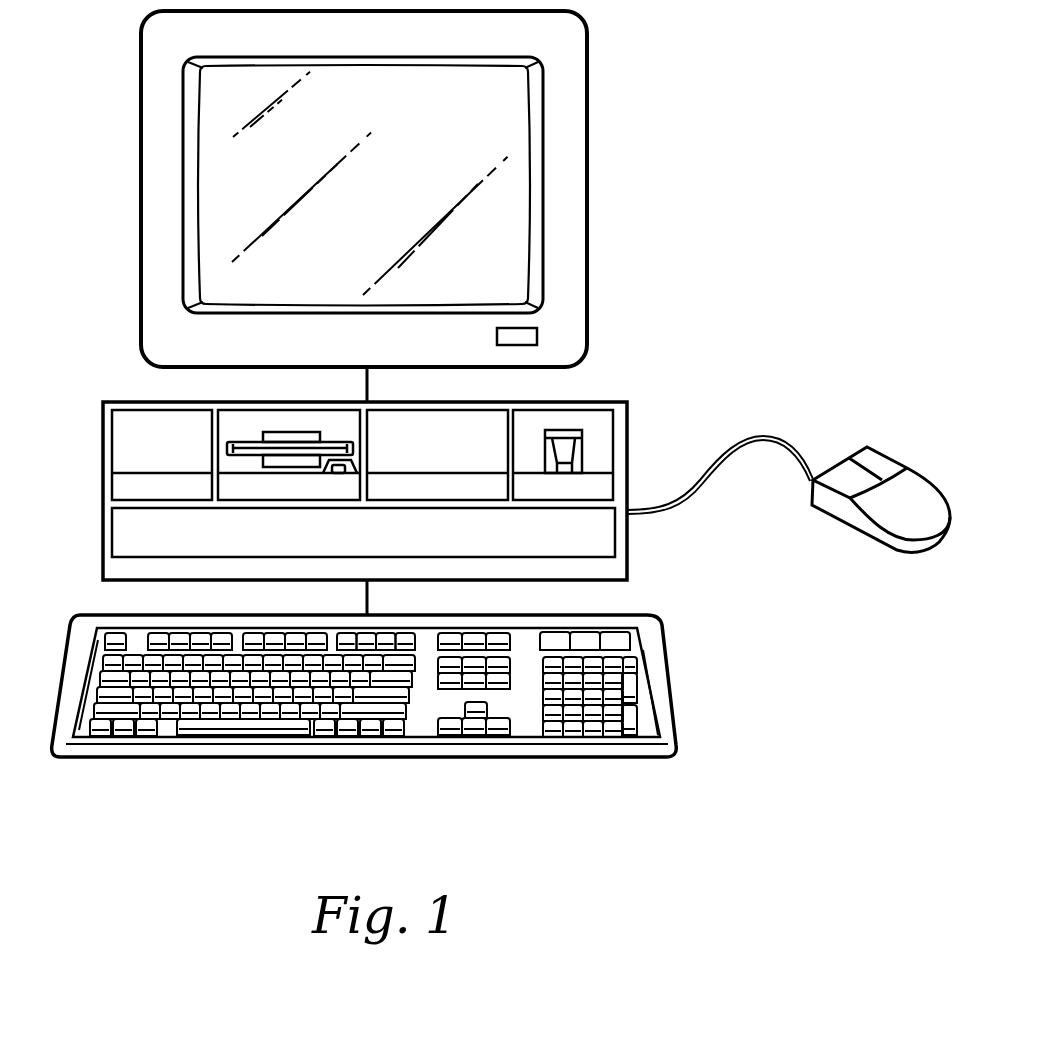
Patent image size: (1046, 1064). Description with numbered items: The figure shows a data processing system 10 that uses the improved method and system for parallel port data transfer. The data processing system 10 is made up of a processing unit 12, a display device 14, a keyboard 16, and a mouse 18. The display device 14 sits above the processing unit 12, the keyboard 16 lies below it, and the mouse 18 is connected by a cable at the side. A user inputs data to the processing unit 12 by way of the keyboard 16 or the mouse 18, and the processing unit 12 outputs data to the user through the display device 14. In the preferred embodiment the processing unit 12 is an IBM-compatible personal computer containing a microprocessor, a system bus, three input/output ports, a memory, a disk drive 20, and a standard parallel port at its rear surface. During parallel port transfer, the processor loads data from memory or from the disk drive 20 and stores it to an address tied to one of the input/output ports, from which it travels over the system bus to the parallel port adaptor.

The data processing system 10 is at (668, 331).
The processing unit 12 is at (627, 446).
The display device 14 is at (587, 200).
The keyboard 16 is at (660, 651).
The mouse 18 is at (850, 458).
The disk drive 20 is at (263, 436).